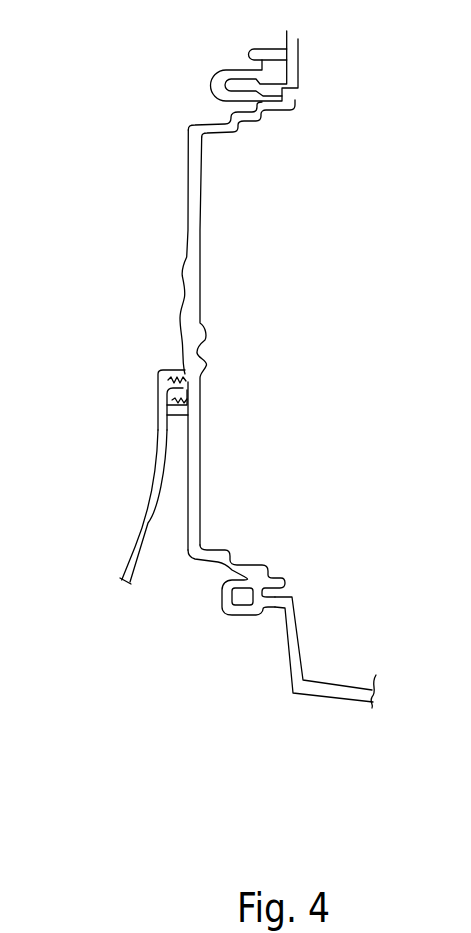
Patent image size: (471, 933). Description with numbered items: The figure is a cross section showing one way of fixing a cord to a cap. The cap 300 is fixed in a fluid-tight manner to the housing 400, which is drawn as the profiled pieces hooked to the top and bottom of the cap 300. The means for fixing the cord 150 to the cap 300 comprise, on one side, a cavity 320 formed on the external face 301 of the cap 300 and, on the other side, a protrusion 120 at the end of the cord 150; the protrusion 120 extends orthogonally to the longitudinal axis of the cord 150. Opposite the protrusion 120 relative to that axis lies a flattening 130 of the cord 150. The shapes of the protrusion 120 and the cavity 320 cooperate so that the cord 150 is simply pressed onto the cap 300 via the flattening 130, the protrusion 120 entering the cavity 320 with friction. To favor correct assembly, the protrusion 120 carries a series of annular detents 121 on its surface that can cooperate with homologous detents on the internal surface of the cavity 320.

The cap 300 is at (163, 157).
The external face 301 is at (188, 219).
The cavity 320 is at (173, 368).
The flattening 130 is at (157, 378).
The protrusion 120 is at (168, 393).
The annular detents 121 is at (175, 418).
The cord 150 is at (140, 518).
The housing 400 is at (298, 61).